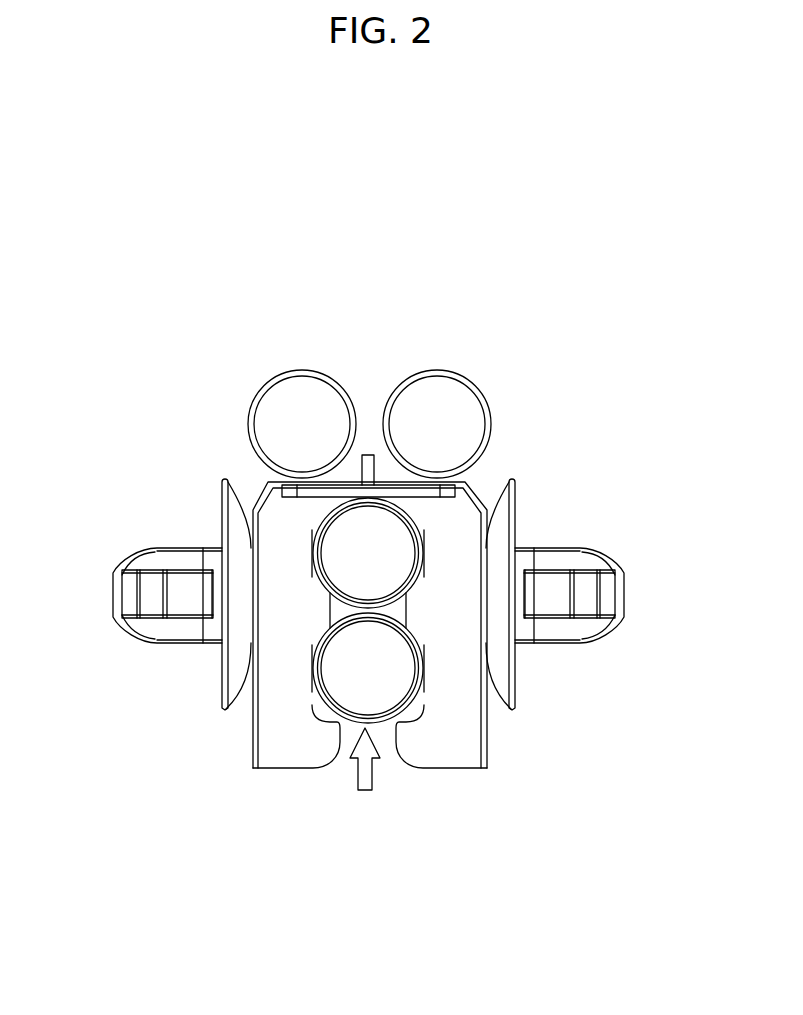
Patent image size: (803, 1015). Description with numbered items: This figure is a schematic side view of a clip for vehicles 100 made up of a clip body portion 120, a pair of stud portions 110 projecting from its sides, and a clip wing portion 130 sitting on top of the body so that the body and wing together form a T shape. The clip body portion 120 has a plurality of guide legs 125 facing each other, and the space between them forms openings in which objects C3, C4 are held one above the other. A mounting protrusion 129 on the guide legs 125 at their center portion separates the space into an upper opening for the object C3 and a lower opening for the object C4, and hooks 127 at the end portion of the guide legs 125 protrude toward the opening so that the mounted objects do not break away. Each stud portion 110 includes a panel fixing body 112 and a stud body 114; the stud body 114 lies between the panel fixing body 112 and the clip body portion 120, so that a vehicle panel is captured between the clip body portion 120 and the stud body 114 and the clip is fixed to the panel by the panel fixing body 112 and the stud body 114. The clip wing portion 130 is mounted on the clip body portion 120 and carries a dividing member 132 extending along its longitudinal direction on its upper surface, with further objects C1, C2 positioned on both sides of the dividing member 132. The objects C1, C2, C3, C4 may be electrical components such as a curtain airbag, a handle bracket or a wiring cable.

The clip for vehicles 100 is at (390, 227).
The stud portion 110 is at (168, 658).
The panel fixing body 112 is at (150, 562).
The stud body 114 is at (222, 497).
The clip body portion 120 is at (243, 743).
The guide legs 125 is at (285, 755).
The hooks 127 is at (407, 730).
The mounting protrusion 129 is at (240, 552).
The clip wing portion 130 is at (475, 488).
The dividing member 132 is at (368, 455).
The object C1 is at (288, 382).
The object C2 is at (435, 388).
The object C3 is at (388, 527).
The object C4 is at (398, 665).